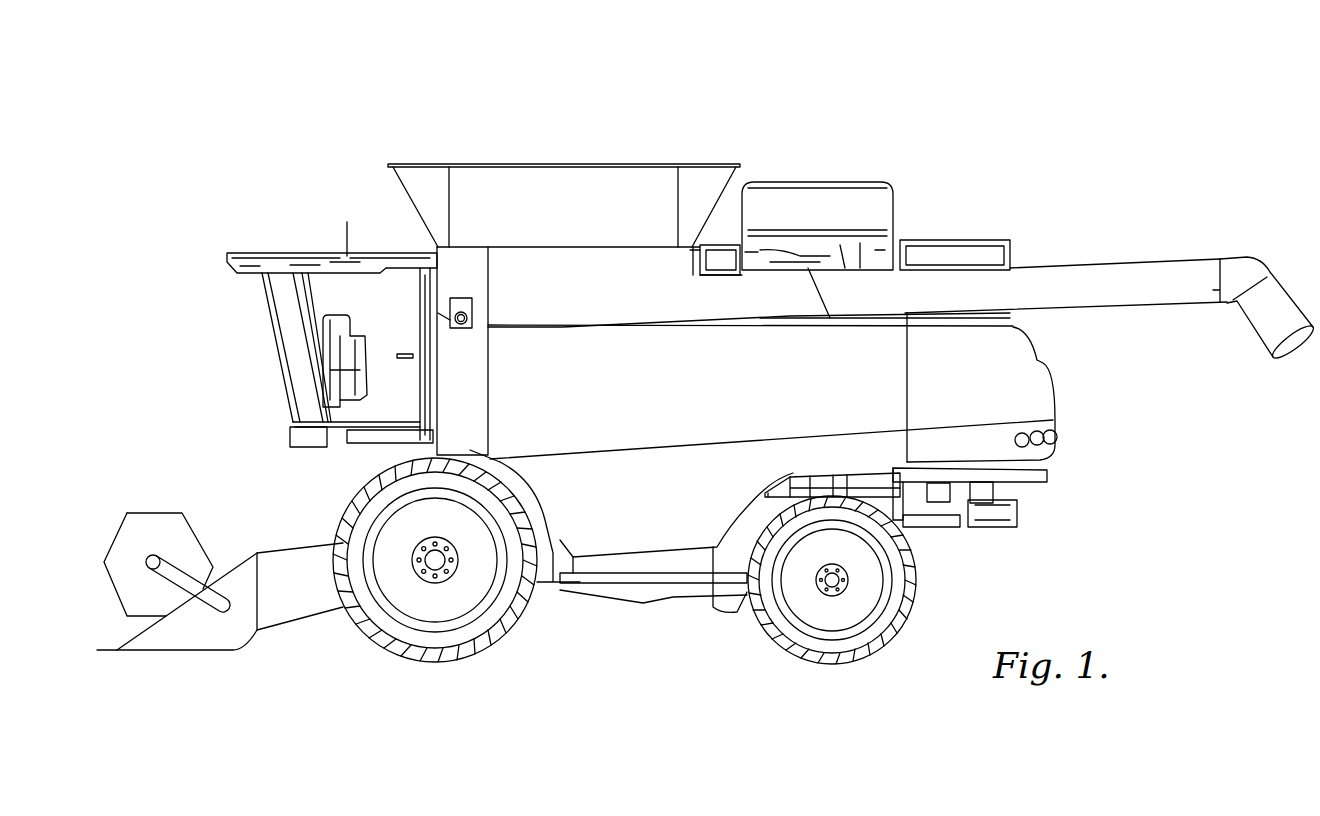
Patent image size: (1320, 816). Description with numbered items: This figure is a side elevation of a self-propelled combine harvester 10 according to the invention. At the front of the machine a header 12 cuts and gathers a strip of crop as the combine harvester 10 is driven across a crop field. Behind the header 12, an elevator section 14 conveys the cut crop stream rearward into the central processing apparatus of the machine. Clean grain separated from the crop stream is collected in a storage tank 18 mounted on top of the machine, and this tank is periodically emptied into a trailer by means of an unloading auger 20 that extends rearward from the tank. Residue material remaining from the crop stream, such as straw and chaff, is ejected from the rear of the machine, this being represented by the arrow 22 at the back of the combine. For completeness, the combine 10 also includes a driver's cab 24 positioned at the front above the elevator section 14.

The combine harvester 10 is at (186, 134).
The header 12 is at (182, 652).
The elevator section 14 is at (295, 612).
The storage tank 18 is at (626, 162).
The unloading auger 20 is at (863, 302).
The arrow 22 is at (1040, 507).
The driver's cab 24 is at (300, 395).